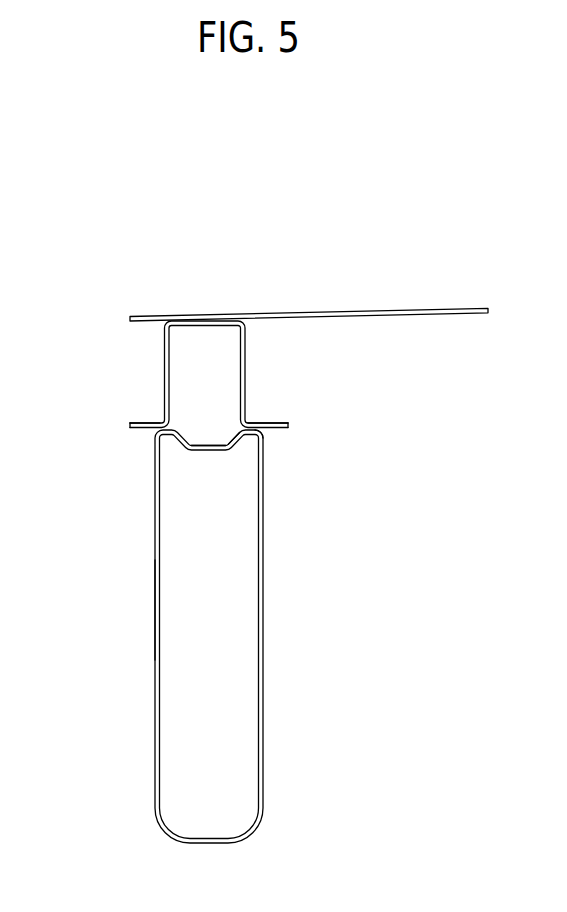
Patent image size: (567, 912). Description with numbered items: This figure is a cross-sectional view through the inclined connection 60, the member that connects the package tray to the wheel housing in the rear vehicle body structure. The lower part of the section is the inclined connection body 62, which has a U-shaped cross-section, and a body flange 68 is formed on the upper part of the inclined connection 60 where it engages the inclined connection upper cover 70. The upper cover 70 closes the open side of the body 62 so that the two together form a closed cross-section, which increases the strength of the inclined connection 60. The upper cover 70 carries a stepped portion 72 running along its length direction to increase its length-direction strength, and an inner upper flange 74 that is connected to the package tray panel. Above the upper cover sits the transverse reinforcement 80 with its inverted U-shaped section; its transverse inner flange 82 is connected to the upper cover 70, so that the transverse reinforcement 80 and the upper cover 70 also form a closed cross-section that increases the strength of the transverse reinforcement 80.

The inclined connection 60 is at (142, 537).
The inclined connection body 62 is at (155, 605).
The body flange 68 is at (140, 432).
The inclined connection upper cover 70 is at (217, 466).
The stepped portion 72 is at (234, 433).
The inner upper flange 74 is at (254, 433).
The transverse reinforcement 80 is at (140, 370).
The transverse inner flange 82 is at (282, 422).